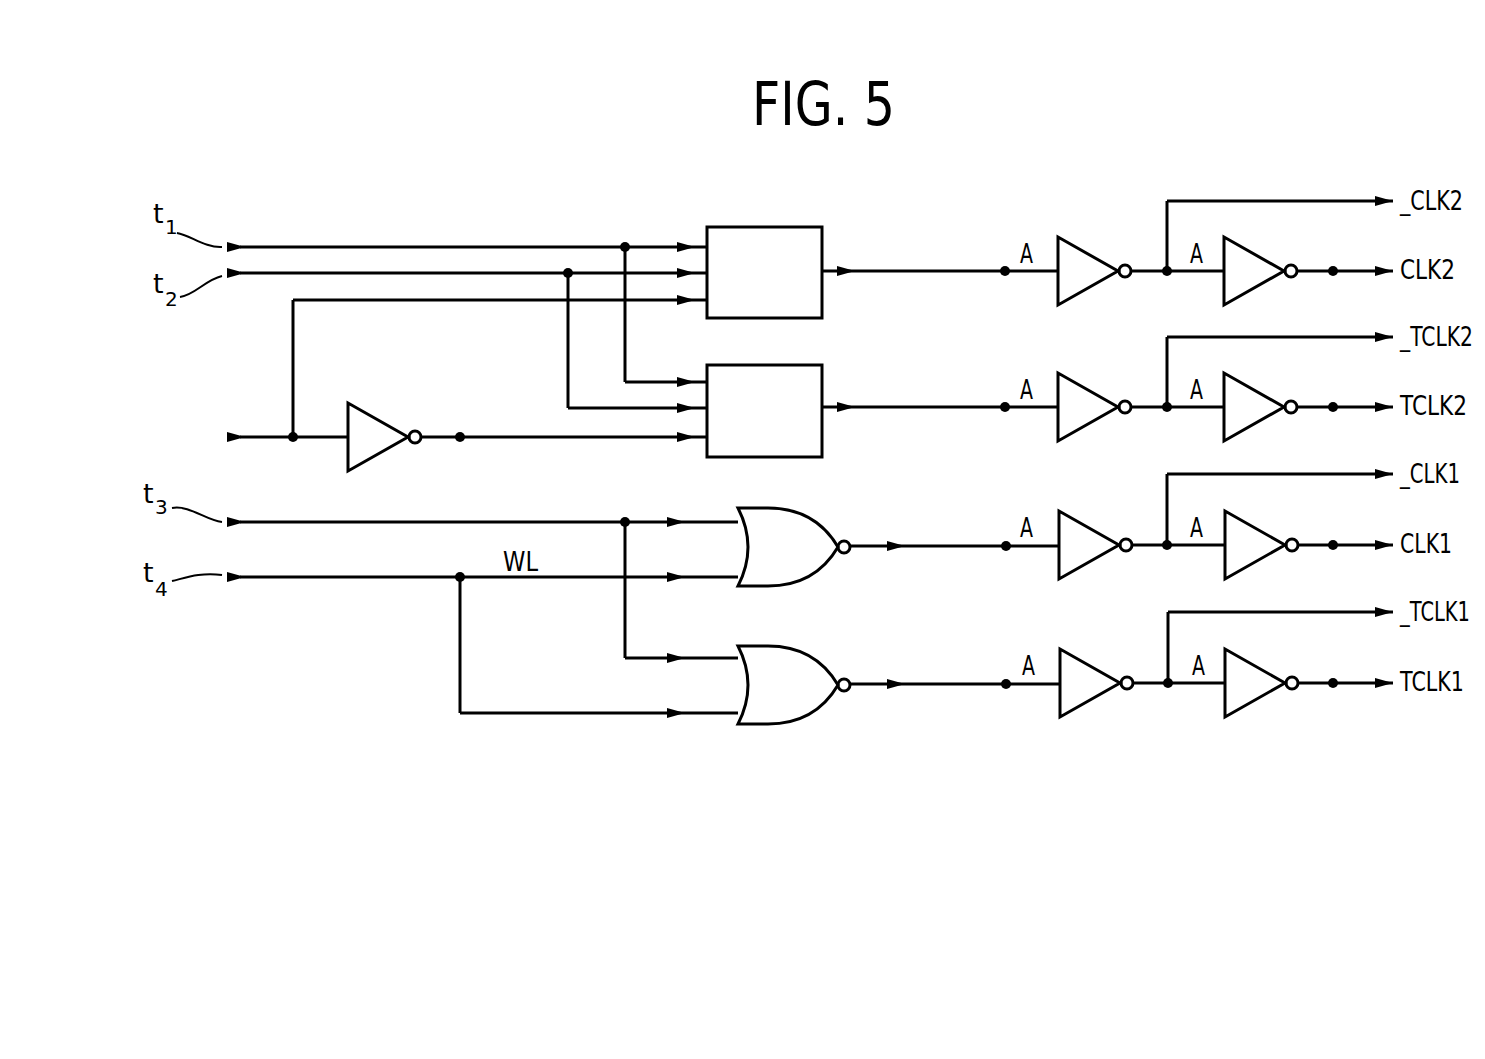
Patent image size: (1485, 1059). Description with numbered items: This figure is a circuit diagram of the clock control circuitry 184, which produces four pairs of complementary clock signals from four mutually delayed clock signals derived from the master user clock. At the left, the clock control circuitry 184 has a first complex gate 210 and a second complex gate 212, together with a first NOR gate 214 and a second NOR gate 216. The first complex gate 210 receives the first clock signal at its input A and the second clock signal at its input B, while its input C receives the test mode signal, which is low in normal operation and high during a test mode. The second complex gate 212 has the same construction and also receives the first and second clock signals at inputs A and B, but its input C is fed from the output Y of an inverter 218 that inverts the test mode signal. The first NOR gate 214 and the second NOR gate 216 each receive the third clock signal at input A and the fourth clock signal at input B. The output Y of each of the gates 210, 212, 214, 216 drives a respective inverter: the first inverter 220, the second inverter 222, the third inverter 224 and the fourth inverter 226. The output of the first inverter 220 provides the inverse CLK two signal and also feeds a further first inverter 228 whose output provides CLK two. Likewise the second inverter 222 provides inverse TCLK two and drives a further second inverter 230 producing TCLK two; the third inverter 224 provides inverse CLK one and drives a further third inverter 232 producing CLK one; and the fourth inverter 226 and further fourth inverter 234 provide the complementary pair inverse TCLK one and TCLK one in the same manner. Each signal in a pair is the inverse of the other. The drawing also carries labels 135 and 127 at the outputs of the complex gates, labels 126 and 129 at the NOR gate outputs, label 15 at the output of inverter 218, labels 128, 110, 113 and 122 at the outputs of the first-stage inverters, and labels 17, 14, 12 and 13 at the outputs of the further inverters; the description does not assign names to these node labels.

The clock control circuitry 184 is at (1166, 178).
The first complex gate 210 is at (712, 227).
The second complex gate 212 is at (822, 433).
The first NOR gate 214 is at (817, 573).
The second NOR gate 216 is at (817, 710).
The inverter 218 is at (380, 418).
The first inverter 220 is at (1057, 292).
The second inverter 222 is at (1057, 428).
The third inverter 224 is at (1058, 566).
The fourth inverter 226 is at (1060, 704).
The further first inverter 228 is at (1250, 247).
The further second inverter 230 is at (1250, 384).
The further third inverter 232 is at (1251, 522).
The further fourth inverter 234 is at (1251, 660).
The AOI gate output signal 135 is at (940, 246).
The AOI gate output signal 127 is at (940, 385).
The NOR gate output signal (MA CLK1) 126 is at (946, 550).
The NOR gate output signal 129 is at (947, 688).
The inverter output node 128 is at (1168, 270).
The inverter output node 110 is at (1252, 387).
The inverter output node 113 is at (1252, 525).
The inverter output node 122 is at (1252, 663).
The inverter output node (CLK2) 17 is at (1335, 270).
The inverter output node (TCLK2) 14 is at (1337, 407).
The inverter output node (CLK1) 12 is at (1337, 545).
The inverter output node (TCLK1) 13 is at (1337, 683).
The inverter output node 15 is at (560, 439).